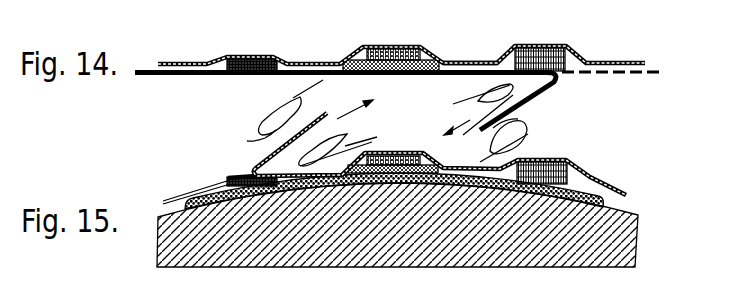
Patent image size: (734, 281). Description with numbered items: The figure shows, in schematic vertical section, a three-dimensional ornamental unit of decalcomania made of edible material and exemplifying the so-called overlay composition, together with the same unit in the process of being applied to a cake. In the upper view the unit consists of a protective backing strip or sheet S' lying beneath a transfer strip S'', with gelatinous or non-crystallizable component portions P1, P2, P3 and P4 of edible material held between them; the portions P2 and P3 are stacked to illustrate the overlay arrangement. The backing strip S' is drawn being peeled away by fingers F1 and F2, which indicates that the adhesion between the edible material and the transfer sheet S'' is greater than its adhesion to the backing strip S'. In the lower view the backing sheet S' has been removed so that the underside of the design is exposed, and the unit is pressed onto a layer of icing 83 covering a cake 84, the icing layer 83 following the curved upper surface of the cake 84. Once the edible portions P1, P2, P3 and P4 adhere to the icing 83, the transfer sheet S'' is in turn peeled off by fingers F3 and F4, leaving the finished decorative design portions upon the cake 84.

In FIG. 14, the backing strip S' is at (398, 101).
In FIG. 15, the backing strip S' is at (394, 158).
In FIG. 14, the transfer strip S'' is at (401, 39).
In FIG. 14, the component portion P1 is at (283, 60).
In FIG. 14, the component portion P2 is at (453, 61).
In FIG. 14, the component portion P3 is at (423, 54).
In FIG. 14, the component portion P4 is at (570, 60).
In FIG. 14, the finger F1 is at (463, 99).
In FIG. 14, the finger F2 is at (518, 119).
In FIG. 15, the finger F3 is at (247, 141).
In FIG. 15, the finger F4 is at (374, 138).
In FIG. 15, the layer of icing 83 is at (606, 201).
In FIG. 15, the cake 84 is at (642, 232).